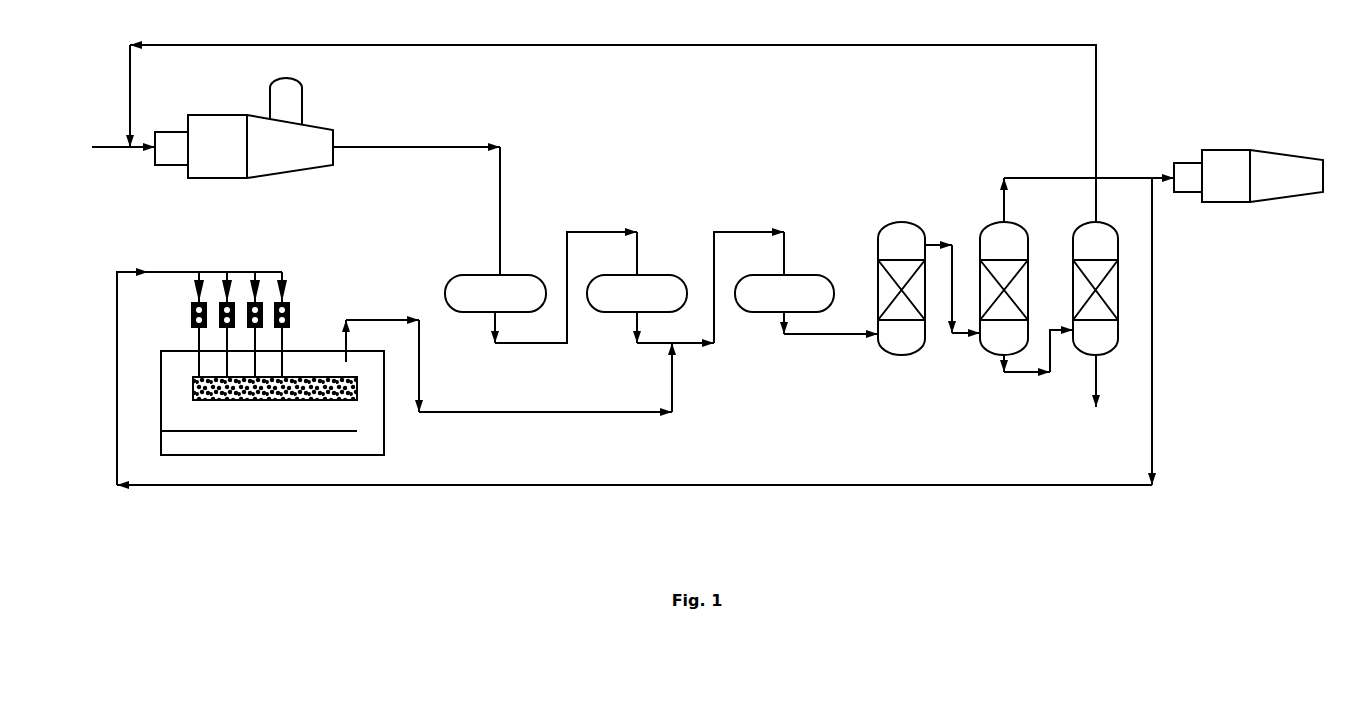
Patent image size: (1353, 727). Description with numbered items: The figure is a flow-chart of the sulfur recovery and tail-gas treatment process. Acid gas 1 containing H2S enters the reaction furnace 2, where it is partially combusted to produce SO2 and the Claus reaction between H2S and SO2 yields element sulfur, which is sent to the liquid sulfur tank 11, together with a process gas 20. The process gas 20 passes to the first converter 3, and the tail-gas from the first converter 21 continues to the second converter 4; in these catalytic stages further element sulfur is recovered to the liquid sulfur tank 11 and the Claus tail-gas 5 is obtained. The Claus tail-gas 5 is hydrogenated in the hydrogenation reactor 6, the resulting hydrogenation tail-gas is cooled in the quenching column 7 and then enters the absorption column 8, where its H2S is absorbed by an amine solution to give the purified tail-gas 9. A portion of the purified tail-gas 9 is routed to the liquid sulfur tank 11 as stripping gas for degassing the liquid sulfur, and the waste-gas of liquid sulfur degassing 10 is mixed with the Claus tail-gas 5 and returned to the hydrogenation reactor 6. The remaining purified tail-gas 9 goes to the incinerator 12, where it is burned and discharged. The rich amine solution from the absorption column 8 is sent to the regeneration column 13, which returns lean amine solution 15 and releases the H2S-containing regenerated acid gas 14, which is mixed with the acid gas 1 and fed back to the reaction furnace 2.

The acid gas 1 is at (114, 143).
The reaction furnace 2 is at (244, 128).
The first converter 3 is at (495, 293).
The second converter 4 is at (637, 293).
The Claus tail-gas 5 is at (710, 276).
The hydrogenation reactor 6 is at (784, 293).
The quenching column 7 is at (901, 288).
The absorption column 8 is at (1004, 288).
The purified tail-gas 9 is at (645, 320).
The waste-gas of liquid sulfur degassing 10 is at (509, 366).
The liquid sulfur tank 11 is at (272, 363).
The incinerator 12 is at (1248, 176).
The regeneration column 13 is at (1095, 288).
The regenerated acid gas 14 is at (613, 123).
The lean amine solution 15 is at (1098, 394).
The tail-gas from reaction furnace (process gas) 20 is at (416, 200).
The tail-gas from first converter 21 is at (566, 287).